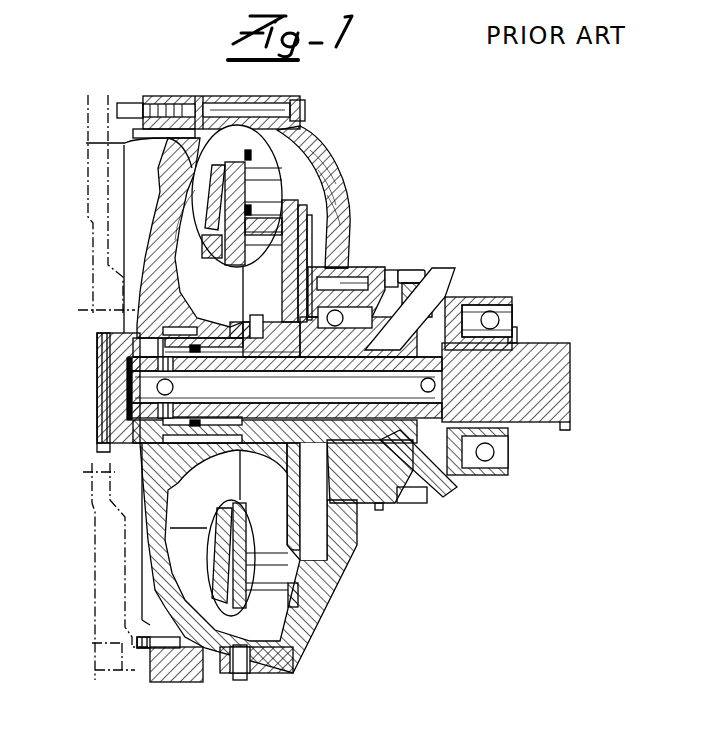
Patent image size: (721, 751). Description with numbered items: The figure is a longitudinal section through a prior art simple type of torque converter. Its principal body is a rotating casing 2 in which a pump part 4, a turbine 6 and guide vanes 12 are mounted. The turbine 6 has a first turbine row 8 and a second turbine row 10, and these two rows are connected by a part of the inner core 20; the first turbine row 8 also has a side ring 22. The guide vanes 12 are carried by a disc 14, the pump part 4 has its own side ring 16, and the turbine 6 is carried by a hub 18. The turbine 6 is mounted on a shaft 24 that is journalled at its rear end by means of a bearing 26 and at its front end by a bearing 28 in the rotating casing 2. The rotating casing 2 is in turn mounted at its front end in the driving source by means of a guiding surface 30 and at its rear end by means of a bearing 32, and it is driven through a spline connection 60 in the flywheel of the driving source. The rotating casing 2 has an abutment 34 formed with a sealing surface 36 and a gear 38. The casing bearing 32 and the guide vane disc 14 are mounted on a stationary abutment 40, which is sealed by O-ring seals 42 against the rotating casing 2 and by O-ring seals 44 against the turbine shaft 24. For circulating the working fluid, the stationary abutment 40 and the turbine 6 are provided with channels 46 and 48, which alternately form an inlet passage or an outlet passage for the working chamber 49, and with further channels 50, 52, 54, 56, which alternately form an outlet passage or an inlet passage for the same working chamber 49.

The rotating casing 2 is at (340, 224).
The pump part 4 is at (200, 206).
The turbine 6 is at (265, 285).
The first turbine row 8 is at (296, 133).
The second turbine row 10 is at (272, 306).
The guide vanes 12 is at (313, 178).
The disc 14 is at (325, 200).
The side ring 16 is at (170, 176).
The hub 18 is at (312, 256).
The inner core 20 is at (255, 156).
The side ring 22 is at (318, 157).
The shaft 24 is at (552, 344).
The bearing 26 is at (512, 312).
The bearing 28 is at (102, 412).
The guiding surface 30 is at (97, 450).
The bearing 32 is at (370, 507).
The abutment 34 is at (397, 503).
The sealing surface 36 is at (378, 510).
The gear 38 is at (427, 500).
The stationary abutment 40 is at (438, 275).
The O-ring seals 42 is at (388, 290).
The O-ring seals 44 is at (510, 327).
The channel 46 is at (462, 488).
The channel 48 is at (250, 322).
The working chamber 49 is at (152, 492).
The channel 50 is at (452, 292).
The channel 52 is at (421, 385).
The channel 54 is at (281, 400).
The channel 56 is at (175, 385).
The spline connection 60 is at (125, 143).